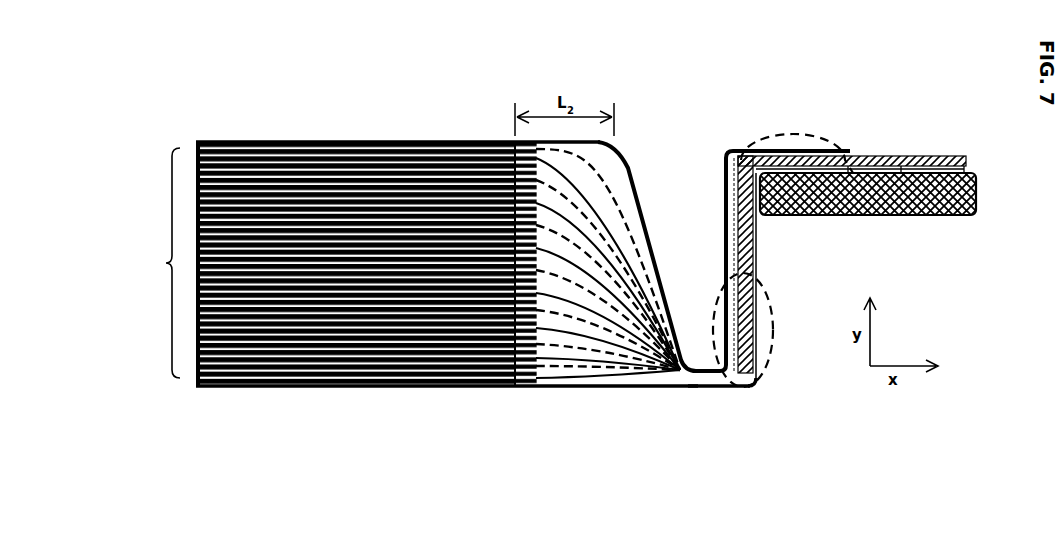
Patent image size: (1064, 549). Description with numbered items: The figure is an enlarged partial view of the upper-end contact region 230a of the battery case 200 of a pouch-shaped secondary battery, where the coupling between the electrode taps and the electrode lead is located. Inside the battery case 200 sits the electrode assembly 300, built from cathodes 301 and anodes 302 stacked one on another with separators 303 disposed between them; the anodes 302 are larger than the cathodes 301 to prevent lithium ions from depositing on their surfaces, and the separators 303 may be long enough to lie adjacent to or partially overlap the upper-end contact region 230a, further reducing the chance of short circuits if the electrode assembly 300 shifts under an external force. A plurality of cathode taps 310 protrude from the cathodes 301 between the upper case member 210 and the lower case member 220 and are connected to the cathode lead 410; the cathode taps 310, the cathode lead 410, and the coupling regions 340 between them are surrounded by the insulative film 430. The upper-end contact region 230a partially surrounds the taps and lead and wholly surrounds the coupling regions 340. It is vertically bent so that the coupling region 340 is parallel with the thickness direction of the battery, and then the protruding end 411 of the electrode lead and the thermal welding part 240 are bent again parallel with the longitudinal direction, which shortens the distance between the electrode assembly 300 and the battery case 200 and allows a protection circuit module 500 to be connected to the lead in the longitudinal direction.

The battery case 200 is at (226, 127).
The upper case member 210 is at (433, 133).
The lower case member 220 is at (415, 378).
The upper-end contact region 230a is at (680, 117).
The thermal welding part 240 is at (878, 132).
The electrode assembly 300 is at (328, 264).
The cathodes 301 is at (310, 160).
The anodes 302 is at (335, 325).
The separators 303 is at (563, 348).
The cathode taps 310 is at (700, 378).
The coupling regions 340 is at (740, 380).
The cathode lead 410 is at (745, 255).
The protruding end of the electrode lead 411 is at (958, 147).
The insulative film 430 is at (715, 200).
The protection circuit module 500 is at (875, 208).